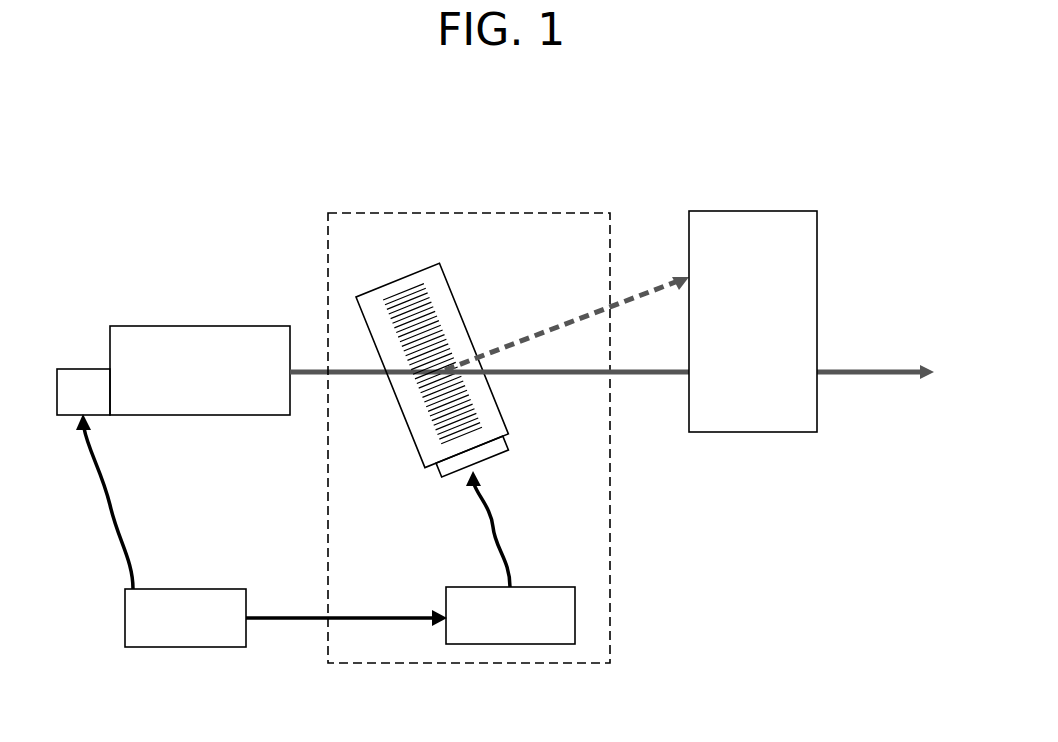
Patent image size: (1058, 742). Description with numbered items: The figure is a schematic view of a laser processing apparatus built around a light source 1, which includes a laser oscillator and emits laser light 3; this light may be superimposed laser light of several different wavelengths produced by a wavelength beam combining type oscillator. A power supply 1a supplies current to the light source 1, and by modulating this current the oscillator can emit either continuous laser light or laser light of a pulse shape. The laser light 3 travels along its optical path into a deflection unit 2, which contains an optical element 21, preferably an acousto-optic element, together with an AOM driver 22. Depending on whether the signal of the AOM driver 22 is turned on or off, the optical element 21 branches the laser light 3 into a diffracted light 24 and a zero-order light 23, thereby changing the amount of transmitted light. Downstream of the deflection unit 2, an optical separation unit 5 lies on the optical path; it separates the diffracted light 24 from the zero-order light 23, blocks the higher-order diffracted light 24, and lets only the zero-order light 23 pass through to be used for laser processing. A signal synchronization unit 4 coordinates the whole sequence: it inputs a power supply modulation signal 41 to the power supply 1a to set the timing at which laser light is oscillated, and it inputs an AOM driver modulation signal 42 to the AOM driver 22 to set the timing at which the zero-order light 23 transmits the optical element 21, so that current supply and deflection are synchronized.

The light source 1 is at (200, 326).
The power supply 1a is at (81, 368).
The deflection unit 2 is at (491, 212).
The optical element 21 is at (388, 283).
The AOM driver 22 is at (545, 585).
The zero-order light 23 is at (558, 378).
The diffracted light 24 is at (553, 322).
The laser light 3 is at (314, 378).
The signal synchronization unit 4 is at (124, 618).
The power supply modulation signal 41 is at (108, 506).
The AOM driver modulation signal 42 is at (290, 614).
The optical separation unit 5 is at (748, 211).